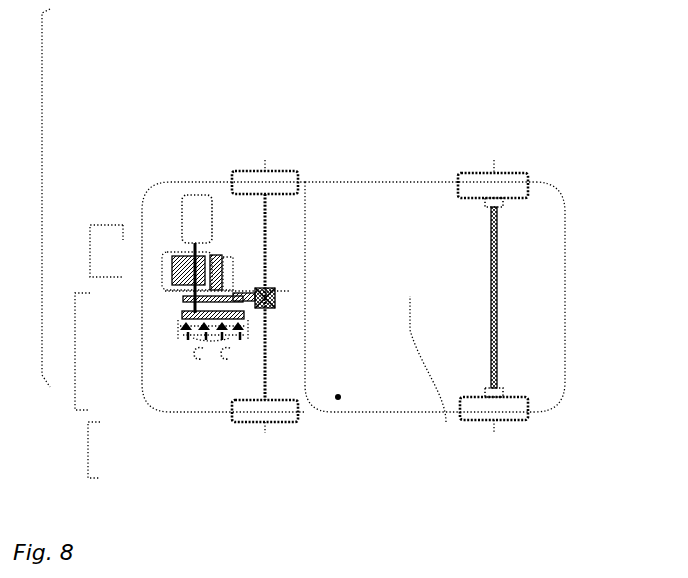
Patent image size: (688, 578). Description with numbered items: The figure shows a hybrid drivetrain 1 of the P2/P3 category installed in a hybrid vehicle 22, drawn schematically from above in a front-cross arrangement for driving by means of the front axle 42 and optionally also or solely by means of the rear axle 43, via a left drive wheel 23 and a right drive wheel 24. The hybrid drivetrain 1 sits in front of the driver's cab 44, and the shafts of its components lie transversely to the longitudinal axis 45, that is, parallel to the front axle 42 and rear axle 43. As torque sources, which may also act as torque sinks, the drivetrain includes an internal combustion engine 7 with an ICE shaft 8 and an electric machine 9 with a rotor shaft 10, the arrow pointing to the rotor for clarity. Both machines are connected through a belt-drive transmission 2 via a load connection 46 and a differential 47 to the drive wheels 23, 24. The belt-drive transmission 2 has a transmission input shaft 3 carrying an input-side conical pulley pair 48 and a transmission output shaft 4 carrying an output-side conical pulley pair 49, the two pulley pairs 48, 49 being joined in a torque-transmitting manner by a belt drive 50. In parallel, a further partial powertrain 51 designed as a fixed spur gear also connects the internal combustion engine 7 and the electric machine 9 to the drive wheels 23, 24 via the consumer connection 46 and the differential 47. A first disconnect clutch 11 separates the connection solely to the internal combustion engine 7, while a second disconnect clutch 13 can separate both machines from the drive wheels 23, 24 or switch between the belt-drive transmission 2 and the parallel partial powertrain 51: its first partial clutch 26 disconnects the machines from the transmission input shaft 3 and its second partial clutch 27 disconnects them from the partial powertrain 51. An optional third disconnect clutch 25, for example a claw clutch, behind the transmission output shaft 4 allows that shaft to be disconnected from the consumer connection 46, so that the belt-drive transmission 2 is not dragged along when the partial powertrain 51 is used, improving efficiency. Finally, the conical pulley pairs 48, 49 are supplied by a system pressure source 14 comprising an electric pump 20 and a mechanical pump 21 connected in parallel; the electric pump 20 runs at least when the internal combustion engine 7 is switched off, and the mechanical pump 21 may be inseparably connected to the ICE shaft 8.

The hybrid drivetrain 1 is at (42, 238).
The belt-drive transmission 2 is at (75, 352).
The transmission input shaft 3 is at (205, 300).
The transmission output shaft 4 is at (200, 312).
The internal combustion engine 7 is at (226, 258).
The ICE shaft 8 is at (214, 256).
The electric machine 9 is at (175, 268).
The rotor shaft 10 is at (186, 250).
The first disconnect clutch 11 is at (195, 246).
The second disconnect clutch 13 is at (90, 250).
The system pressure source 14 is at (88, 452).
The electric pump 20 is at (200, 356).
The mechanical pump 21 is at (222, 352).
The hybrid vehicle 22 is at (590, 140).
The left drive wheel 23 is at (283, 423).
The right drive wheel 24 is at (254, 170).
The third disconnect clutch 25 is at (190, 297).
The first partial clutch 26 is at (168, 265).
The second partial clutch 27 is at (168, 282).
The front axle 42 is at (264, 250).
The rear axle 43 is at (497, 290).
The driver's cab 44 is at (339, 401).
The longitudinal axis 45 is at (446, 422).
The load connection 46 is at (248, 290).
The differential 47 is at (258, 288).
The input-side conical pulley pair 48 is at (210, 338).
The output-side conical pulley pair 49 is at (220, 348).
The belt drive 50 is at (205, 330).
The partial powertrain 51 is at (238, 262).